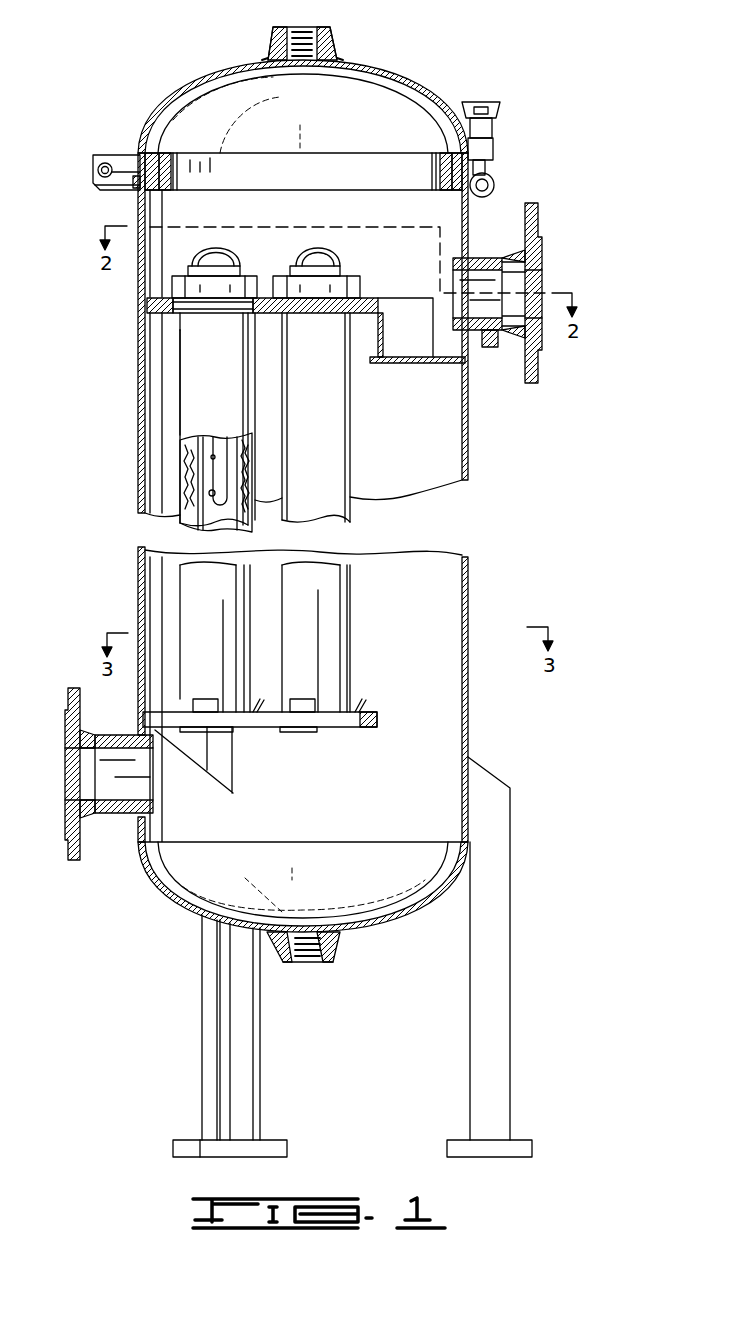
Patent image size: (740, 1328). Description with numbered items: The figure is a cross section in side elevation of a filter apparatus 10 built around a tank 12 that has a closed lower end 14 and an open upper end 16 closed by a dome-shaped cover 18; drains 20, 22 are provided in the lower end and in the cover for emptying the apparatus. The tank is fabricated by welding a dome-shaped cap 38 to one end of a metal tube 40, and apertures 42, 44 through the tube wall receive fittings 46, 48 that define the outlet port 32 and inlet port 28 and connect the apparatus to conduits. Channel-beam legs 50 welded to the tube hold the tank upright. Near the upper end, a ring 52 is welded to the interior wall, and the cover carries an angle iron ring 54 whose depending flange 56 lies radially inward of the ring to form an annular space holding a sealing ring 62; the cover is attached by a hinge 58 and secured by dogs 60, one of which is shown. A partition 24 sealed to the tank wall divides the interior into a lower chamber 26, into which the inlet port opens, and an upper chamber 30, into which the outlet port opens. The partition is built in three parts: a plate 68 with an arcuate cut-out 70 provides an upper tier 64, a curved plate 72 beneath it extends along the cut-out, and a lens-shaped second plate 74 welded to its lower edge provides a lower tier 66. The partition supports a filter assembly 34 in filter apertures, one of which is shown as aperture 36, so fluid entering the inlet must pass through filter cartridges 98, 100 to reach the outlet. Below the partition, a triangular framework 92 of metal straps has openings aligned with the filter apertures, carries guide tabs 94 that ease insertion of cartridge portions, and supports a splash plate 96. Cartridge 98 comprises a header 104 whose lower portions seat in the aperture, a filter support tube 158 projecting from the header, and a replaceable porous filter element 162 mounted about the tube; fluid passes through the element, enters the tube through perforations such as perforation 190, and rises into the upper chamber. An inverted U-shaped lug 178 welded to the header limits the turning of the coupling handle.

The filter apparatus 10 is at (525, 127).
The tank 12 is at (470, 455).
The closed lower end 14 is at (335, 955).
The open upper end 16 is at (140, 155).
The cover 18 is at (377, 60).
The drain 20 is at (275, 962).
The drain 22 is at (335, 27).
The partition 24 is at (146, 304).
The lower chamber 26 is at (425, 730).
The inlet port 28 is at (130, 803).
The upper chamber 30 is at (445, 228).
The outlet port 32 is at (490, 305).
The filter assembly 34 is at (185, 418).
The filter aperture 36 is at (185, 315).
The dome-shaped cap 38 is at (405, 920).
The metal tube 40 is at (468, 610).
The aperture 42 is at (476, 335).
The aperture 44 is at (143, 738).
The fitting 46 is at (540, 258).
The fitting 48 is at (67, 728).
The legs 50 is at (205, 1032).
The ring 52 is at (142, 206).
The angle iron ring 54 is at (150, 128).
The depending flange 56 is at (200, 170).
The hinge 58 is at (93, 158).
The dogs 60 is at (496, 148).
The sealing ring 62 is at (133, 183).
The upper tier 64 is at (148, 297).
The lower tier 66 is at (398, 347).
The plate 68 is at (370, 296).
The arcuate cut-out 70 is at (383, 300).
The curved plate 72 is at (378, 335).
The second plate 74 is at (450, 365).
The triangular framework 92 is at (280, 730).
The guide tabs 94 is at (205, 699).
The splash plate 96 is at (225, 780).
The filter cartridge 98 is at (222, 395).
The filter cartridge 100 is at (330, 395).
The header 104 is at (240, 292).
The filter support tube 158 is at (213, 447).
The filter element 162 is at (190, 485).
The U-shaped lug 178 is at (215, 262).
The perforation 190 is at (212, 493).